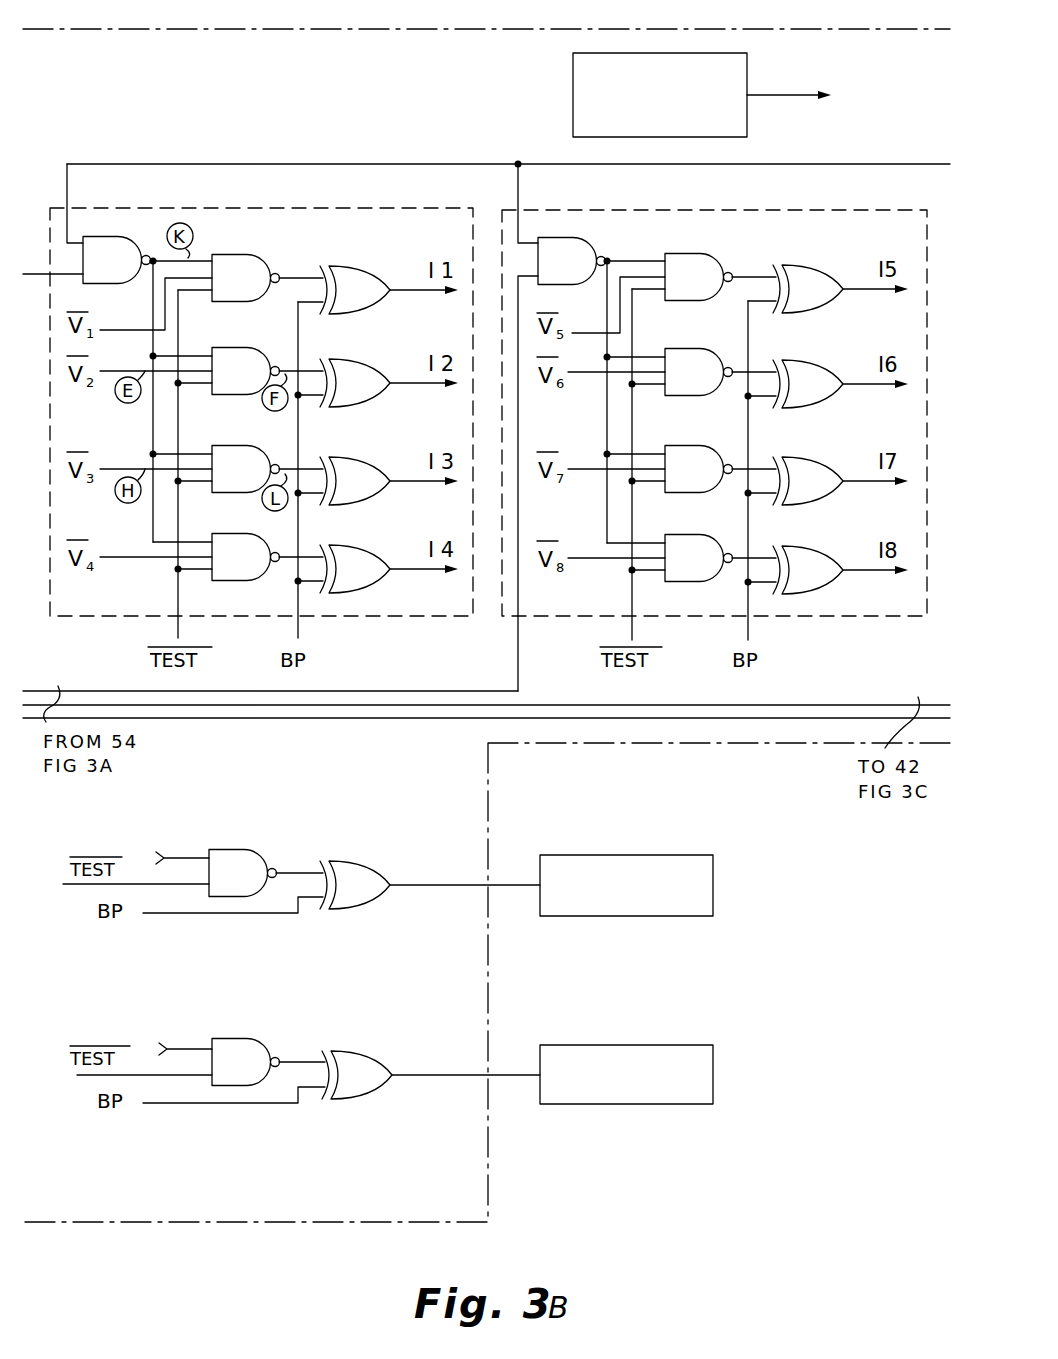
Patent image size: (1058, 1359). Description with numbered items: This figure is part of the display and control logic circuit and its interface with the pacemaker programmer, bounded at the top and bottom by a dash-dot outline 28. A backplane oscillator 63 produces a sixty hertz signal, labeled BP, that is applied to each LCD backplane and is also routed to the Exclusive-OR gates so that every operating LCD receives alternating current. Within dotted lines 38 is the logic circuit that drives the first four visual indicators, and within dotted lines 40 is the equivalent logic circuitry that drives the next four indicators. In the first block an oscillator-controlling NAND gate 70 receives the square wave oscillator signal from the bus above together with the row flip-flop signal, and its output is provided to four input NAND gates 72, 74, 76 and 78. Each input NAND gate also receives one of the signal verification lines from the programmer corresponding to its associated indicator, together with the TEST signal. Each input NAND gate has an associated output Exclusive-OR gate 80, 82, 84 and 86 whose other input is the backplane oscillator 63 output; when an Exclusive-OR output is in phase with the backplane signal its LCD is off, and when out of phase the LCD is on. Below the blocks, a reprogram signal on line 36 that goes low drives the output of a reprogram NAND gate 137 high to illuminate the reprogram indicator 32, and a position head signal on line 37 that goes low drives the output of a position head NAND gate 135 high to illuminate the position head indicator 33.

The control unit boundary 28 is at (92, 29).
The backplane oscillator 63 is at (573, 72).
The logic circuit 38 is at (412, 208).
The logic circuitry block 40 is at (850, 210).
The oscillator-controlling NAND gate 70 is at (87, 260).
The input NAND gate 72 is at (246, 278).
The input NAND gate 74 is at (246, 371).
The input NAND gate 76 is at (246, 469).
The input NAND gate 78 is at (246, 557).
The output Exclusive-OR gate 80 is at (355, 290).
The output Exclusive-OR gate 82 is at (355, 383).
The output Exclusive-OR gate 84 is at (355, 481).
The output Exclusive-OR gate 86 is at (355, 569).
The reprogram signal line 36 is at (182, 858).
The reprogram NAND gate 137 is at (250, 851).
The position head signal line 37 is at (186, 1049).
The position head NAND gate 135 is at (250, 1039).
The reprogram indicator 32 is at (682, 855).
The position head indicator 33 is at (682, 1045).